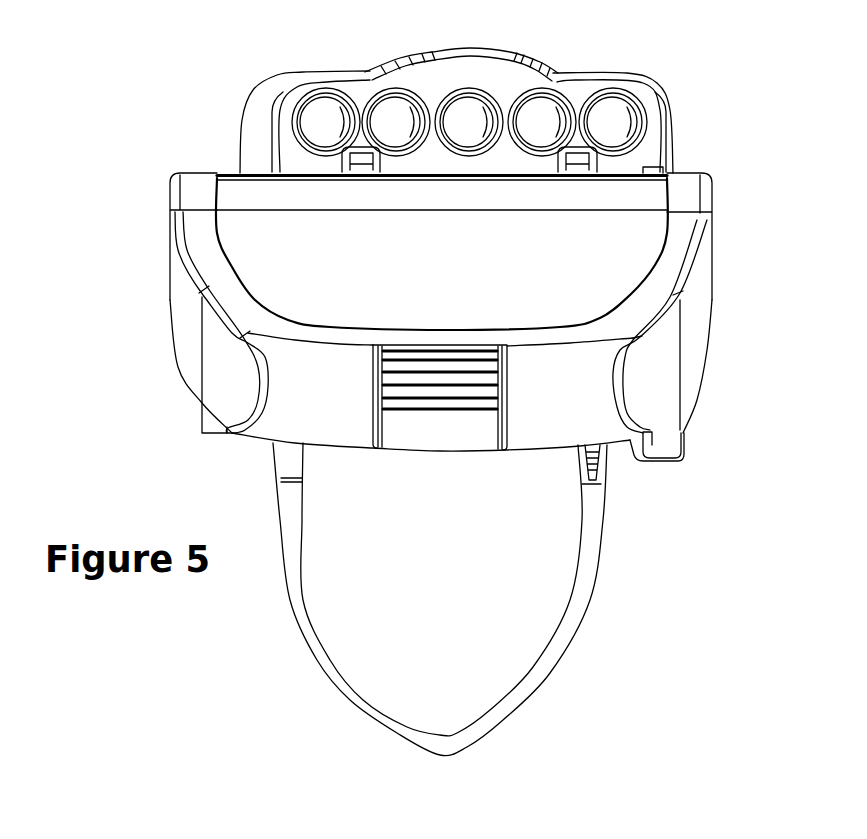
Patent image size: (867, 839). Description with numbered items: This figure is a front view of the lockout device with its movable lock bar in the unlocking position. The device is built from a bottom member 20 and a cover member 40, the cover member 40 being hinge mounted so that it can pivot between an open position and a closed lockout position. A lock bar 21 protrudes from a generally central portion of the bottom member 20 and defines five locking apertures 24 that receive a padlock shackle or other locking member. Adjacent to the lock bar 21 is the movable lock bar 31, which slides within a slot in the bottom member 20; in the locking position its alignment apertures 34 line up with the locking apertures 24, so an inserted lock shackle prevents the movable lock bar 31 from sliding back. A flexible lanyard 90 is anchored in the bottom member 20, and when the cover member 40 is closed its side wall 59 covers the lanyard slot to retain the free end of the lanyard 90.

The bottom member 20 is at (447, 452).
The lock bar 21 is at (258, 102).
The locking apertures 24 is at (448, 110).
The movable lock bar 31 is at (517, 82).
The alignment apertures 34 is at (385, 112).
The cover member 40 is at (695, 257).
The side wall 59 is at (663, 447).
The lanyard 90 is at (562, 632).